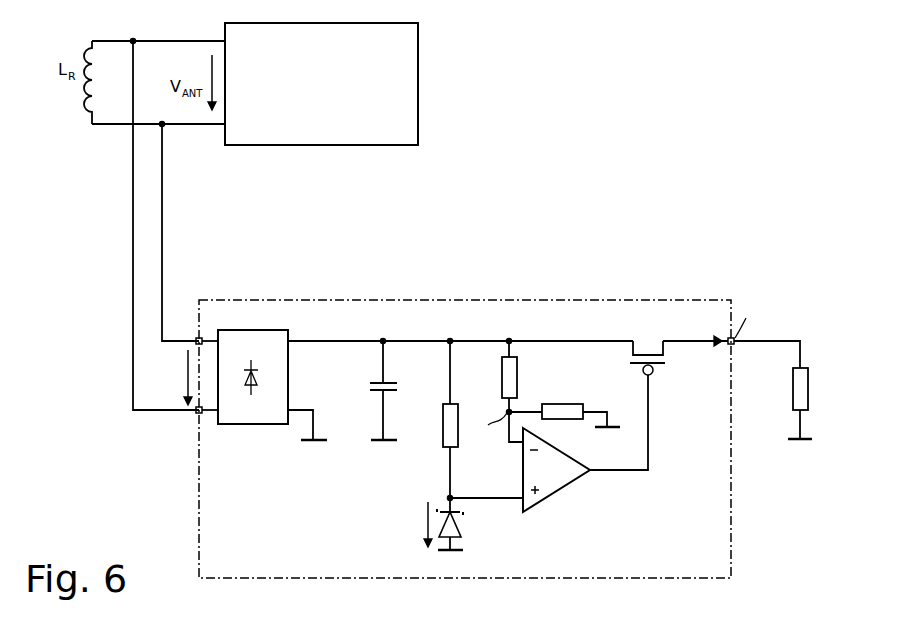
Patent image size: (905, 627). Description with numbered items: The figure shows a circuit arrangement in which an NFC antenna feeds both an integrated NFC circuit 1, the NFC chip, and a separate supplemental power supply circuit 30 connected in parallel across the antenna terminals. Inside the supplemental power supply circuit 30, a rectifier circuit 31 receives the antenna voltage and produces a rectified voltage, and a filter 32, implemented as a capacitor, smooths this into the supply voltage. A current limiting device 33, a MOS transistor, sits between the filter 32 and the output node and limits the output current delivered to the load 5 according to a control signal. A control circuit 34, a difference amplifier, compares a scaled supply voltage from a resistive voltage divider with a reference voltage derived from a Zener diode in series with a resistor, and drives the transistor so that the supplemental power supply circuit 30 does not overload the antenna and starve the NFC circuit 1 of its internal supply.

The NFC circuit 1 is at (321, 84).
The supplemental power supply circuit 30 is at (459, 427).
The rectifier circuit 31 is at (238, 426).
The filter 32 is at (370, 386).
The current limiting device 33 is at (648, 337).
The control circuit 34 is at (562, 490).
The load 5 is at (810, 385).